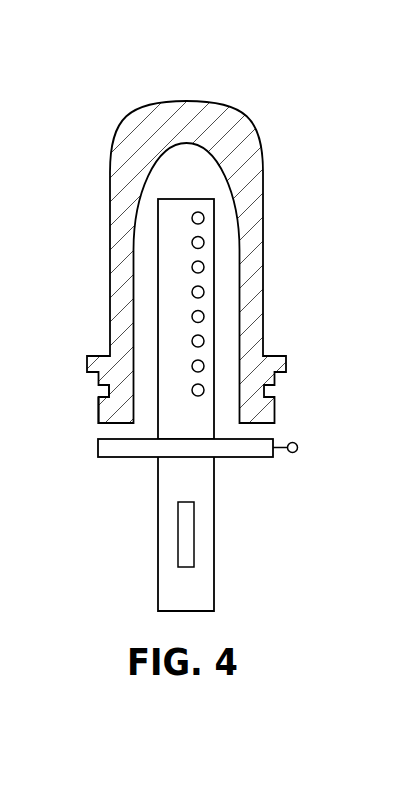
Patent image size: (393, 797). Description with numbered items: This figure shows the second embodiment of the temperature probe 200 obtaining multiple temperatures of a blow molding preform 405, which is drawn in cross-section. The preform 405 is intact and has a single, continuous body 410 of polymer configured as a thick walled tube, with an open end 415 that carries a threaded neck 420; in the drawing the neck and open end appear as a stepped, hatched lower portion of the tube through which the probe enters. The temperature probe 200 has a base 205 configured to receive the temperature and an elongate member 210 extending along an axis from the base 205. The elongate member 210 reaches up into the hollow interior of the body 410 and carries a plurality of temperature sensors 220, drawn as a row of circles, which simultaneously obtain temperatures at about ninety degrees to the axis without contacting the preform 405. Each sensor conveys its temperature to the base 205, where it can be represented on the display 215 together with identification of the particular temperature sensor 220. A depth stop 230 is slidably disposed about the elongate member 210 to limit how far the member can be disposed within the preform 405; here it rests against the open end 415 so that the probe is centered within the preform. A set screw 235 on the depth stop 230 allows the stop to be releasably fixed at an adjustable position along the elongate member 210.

The temperature probe 200 is at (208, 400).
The base 205 is at (197, 534).
The elongate member 210 is at (127, 314).
The display 215 is at (178, 548).
The temperature sensors 220 is at (192, 242).
The depth stop 230 is at (243, 438).
The set screw 235 is at (298, 448).
The blow molding preform 405 is at (184, 227).
The body 410 is at (263, 270).
The open end 415 is at (103, 423).
The threaded neck 420 is at (98, 388).